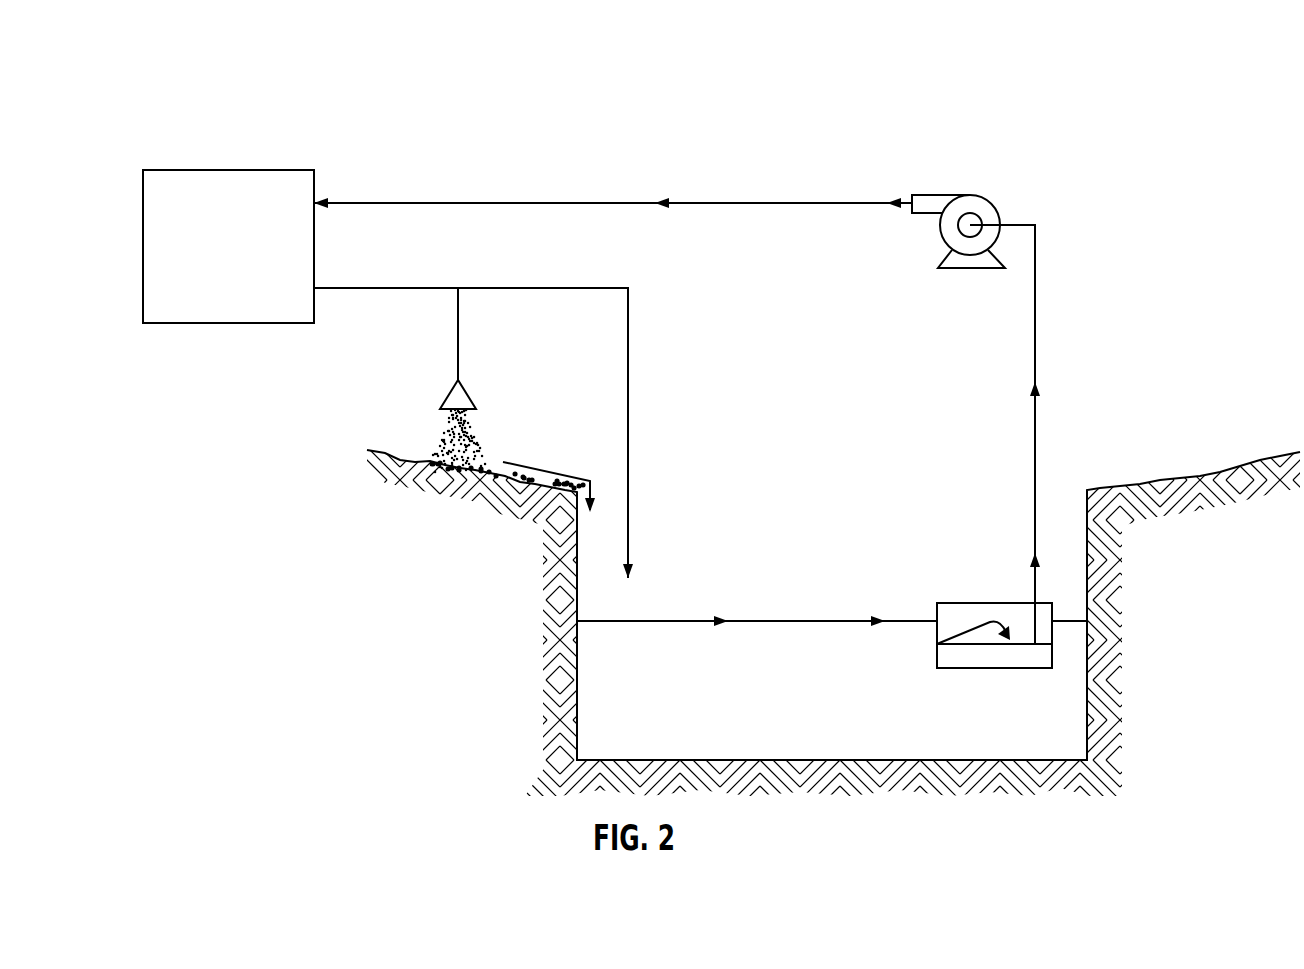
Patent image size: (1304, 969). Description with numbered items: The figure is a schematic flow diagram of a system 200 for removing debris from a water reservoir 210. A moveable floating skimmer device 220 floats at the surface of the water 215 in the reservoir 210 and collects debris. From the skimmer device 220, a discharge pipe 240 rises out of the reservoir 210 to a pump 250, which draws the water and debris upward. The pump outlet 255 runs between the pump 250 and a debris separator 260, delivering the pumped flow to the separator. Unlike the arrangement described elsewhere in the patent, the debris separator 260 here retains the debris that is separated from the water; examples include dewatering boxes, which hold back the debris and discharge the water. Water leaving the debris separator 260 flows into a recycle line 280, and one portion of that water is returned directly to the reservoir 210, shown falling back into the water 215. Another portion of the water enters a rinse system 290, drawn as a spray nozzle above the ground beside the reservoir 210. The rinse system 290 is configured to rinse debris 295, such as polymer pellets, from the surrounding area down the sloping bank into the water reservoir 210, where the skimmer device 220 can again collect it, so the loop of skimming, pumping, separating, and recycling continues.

The system 200 is at (270, 85).
The water reservoir 210 is at (565, 688).
The water 215 is at (813, 693).
The moveable floating skimmer device 220 is at (948, 655).
The discharge pipe 240 is at (1037, 457).
The pump 250 is at (957, 262).
The pump outlet 255 is at (710, 203).
The debris separator 260 is at (278, 212).
The recycle line 280 is at (387, 288).
The rinse system 290 is at (457, 335).
The debris 295 is at (530, 465).